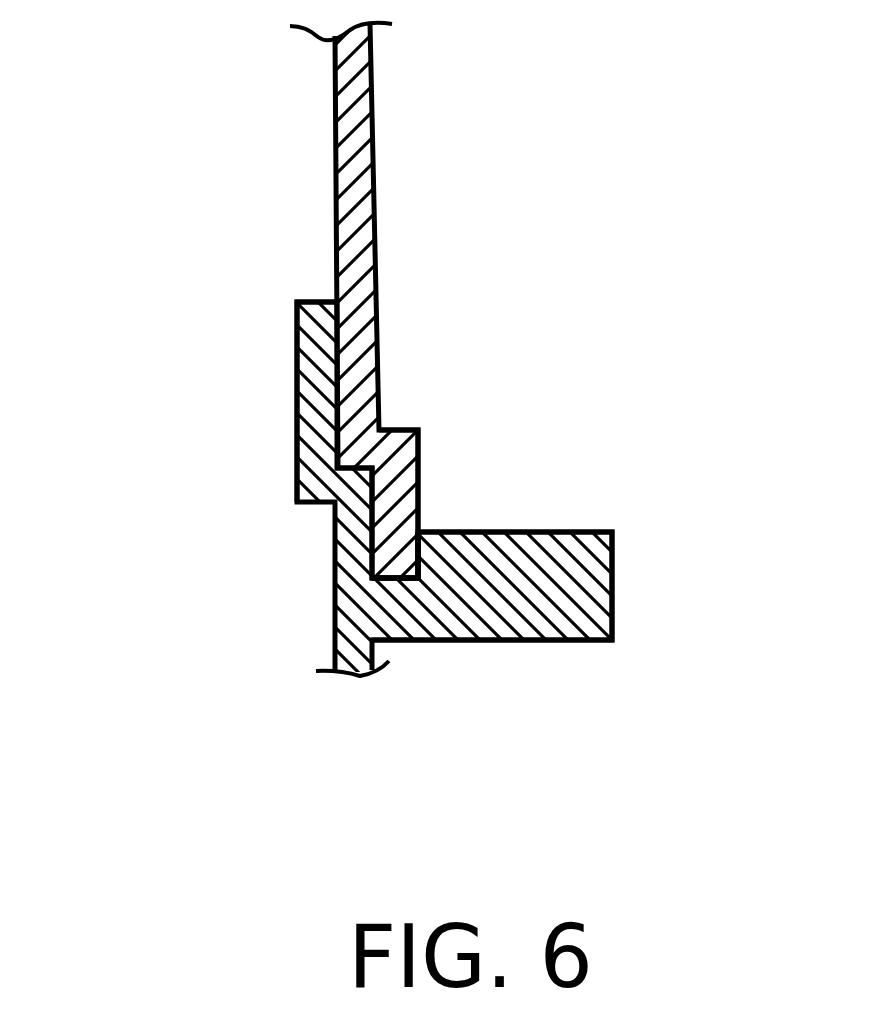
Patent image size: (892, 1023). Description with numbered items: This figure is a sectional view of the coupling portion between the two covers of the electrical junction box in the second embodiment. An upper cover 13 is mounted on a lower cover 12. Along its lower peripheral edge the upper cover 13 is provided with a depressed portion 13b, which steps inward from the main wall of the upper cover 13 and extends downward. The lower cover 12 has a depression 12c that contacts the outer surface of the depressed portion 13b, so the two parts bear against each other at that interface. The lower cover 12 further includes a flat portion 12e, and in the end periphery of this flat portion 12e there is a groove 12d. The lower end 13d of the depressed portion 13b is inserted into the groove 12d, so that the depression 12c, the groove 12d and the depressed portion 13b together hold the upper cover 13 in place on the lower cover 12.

The lower cover 12 is at (283, 340).
The depression 12c is at (294, 428).
The groove 12d is at (400, 583).
The flat portion 12e is at (543, 530).
The upper cover 13 is at (378, 112).
The depressed portion 13b is at (420, 453).
The lower end 13d is at (425, 545).